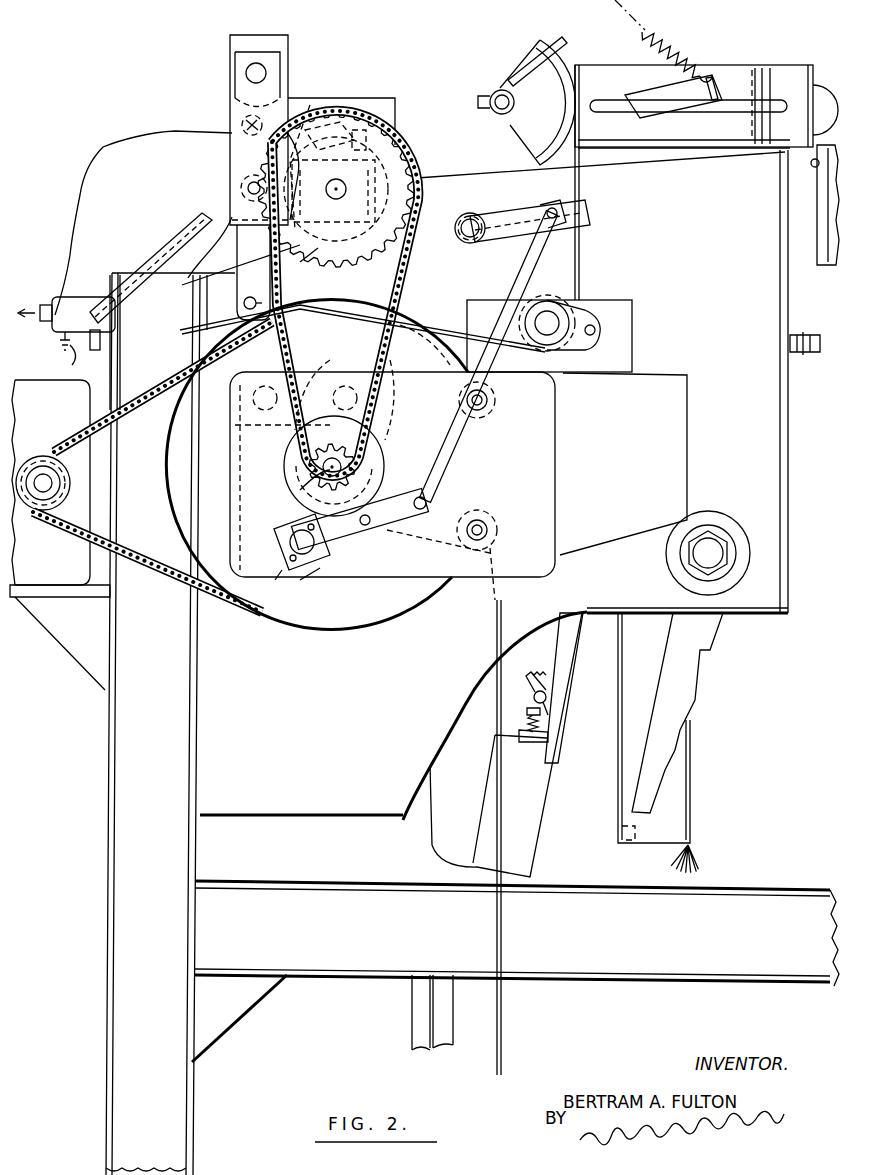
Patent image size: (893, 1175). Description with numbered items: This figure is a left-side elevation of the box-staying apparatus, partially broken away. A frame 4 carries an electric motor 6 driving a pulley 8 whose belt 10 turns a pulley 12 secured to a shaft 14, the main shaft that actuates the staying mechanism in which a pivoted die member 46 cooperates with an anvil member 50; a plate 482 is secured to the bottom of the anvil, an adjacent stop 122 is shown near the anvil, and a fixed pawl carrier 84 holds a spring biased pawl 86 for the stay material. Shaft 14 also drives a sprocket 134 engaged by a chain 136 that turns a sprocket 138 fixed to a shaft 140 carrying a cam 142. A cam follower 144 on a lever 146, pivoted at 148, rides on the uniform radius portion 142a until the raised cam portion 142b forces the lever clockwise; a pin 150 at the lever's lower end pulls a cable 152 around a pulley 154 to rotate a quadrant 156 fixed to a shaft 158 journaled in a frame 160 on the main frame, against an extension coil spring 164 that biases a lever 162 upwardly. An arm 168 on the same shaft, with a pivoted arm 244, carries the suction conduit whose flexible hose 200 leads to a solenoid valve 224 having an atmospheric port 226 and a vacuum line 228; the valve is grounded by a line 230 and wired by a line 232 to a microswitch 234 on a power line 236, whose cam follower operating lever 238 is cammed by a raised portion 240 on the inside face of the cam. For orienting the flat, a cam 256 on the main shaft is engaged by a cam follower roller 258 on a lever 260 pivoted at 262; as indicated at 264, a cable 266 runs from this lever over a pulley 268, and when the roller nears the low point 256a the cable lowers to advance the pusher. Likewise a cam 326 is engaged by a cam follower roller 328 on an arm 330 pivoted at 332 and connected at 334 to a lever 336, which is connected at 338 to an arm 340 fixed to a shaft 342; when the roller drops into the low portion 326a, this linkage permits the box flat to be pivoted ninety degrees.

The frame 4 is at (703, 250).
The electric motor 6 is at (48, 556).
The pulley 8 is at (58, 474).
The belt 10 is at (140, 385).
The pulley 12 is at (378, 606).
The shaft 14 is at (300, 510).
The die member 46 is at (528, 800).
The anvil member 50 is at (672, 800).
The fixed pawl carrier 84 is at (562, 692).
The spring biased pawl 86 is at (534, 672).
The stop 122 is at (622, 832).
The sprocket 134 is at (323, 467).
The chain 136 is at (292, 380).
The sprocket 138 is at (395, 124).
The shaft 140 is at (346, 189).
The cam 142 is at (392, 150).
The uniform radius portion 142a is at (235, 203).
The raised cam portion 142b is at (205, 327).
The cam follower 144 is at (238, 180).
The lever 146 is at (240, 152).
The pivot 148 is at (246, 73).
The pin 150 is at (250, 297).
The cable 152 is at (330, 315).
The pulley 154 is at (572, 310).
The quadrant 156 is at (535, 135).
The shaft 158 is at (597, 100).
The frame 160 is at (745, 70).
The lever 162 is at (714, 76).
The extension coil spring 164 is at (686, 60).
The arm 168 is at (830, 165).
The flexible hose 200 is at (180, 232).
The solenoid valve 224 is at (72, 305).
The port 226 is at (50, 332).
The line 228 is at (100, 340).
The line 230 is at (72, 362).
The line 232 is at (88, 216).
The microswitch 234 is at (335, 118).
The power line 236 is at (314, 106).
The cam follower operating lever 238 is at (365, 128).
The raised portion 240 is at (312, 262).
The arm 244 is at (820, 222).
The cam 256 is at (376, 532).
The low point 256a is at (355, 370).
The cam follower roller 258 is at (400, 325).
The lever 260 is at (438, 345).
The pivot 262 is at (265, 385).
The cable connection 264 is at (380, 436).
The cable 266 is at (490, 470).
The pulley 268 is at (492, 537).
The cam 326 is at (300, 490).
The low portion 326a is at (300, 478).
The cam follower roller 328 is at (318, 548).
The arm 330 is at (340, 560).
The pivot 332 is at (282, 570).
The pivot connection 334 is at (432, 500).
The lever 336 is at (455, 440).
The pivot connection 338 is at (548, 210).
The arm 340 is at (508, 232).
The shaft 342 is at (465, 214).
The plate 482 is at (652, 846).